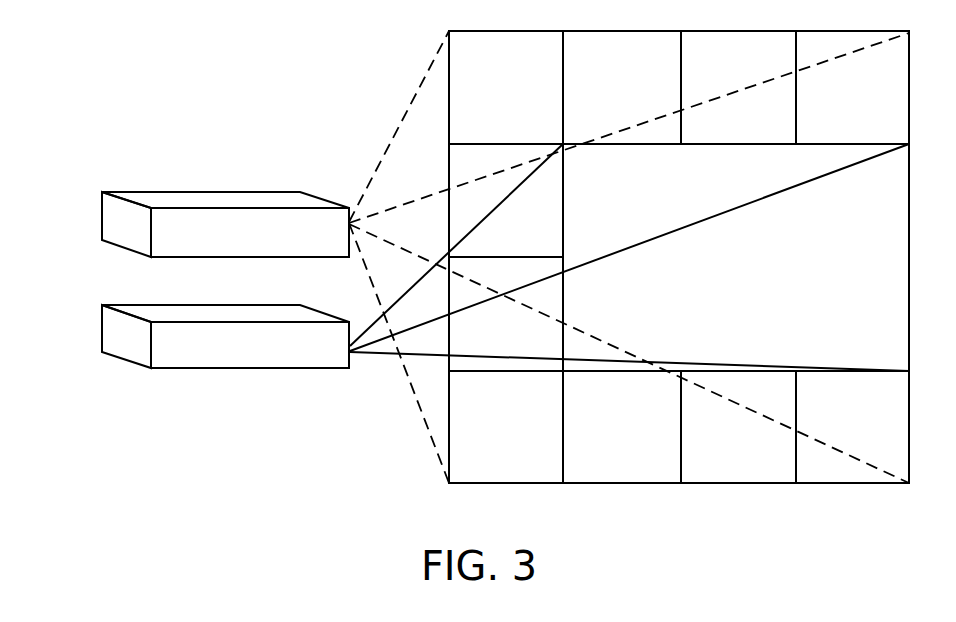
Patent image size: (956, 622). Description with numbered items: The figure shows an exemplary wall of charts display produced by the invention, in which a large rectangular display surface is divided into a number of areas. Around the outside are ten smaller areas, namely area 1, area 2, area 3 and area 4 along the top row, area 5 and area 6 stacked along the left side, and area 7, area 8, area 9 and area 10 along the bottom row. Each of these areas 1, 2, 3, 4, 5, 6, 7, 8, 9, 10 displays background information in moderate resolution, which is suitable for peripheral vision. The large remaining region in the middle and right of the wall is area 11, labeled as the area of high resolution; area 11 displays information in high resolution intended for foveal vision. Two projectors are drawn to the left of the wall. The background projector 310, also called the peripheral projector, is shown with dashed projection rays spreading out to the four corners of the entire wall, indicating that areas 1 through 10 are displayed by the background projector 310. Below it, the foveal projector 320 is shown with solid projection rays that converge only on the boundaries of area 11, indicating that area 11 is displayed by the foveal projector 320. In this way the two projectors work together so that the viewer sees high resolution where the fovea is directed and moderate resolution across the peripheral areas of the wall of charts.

The area 1 is at (506, 87).
The area 2 is at (622, 87).
The area 3 is at (738, 87).
The area 4 is at (852, 87).
The area 5 is at (506, 200).
The area 6 is at (506, 314).
The area 7 is at (506, 427).
The area 8 is at (622, 427).
The area 9 is at (738, 427).
The area 10 is at (852, 427).
The area 11 is at (736, 257).
The background projector 310 is at (106, 219).
The foveal projector 320 is at (106, 335).